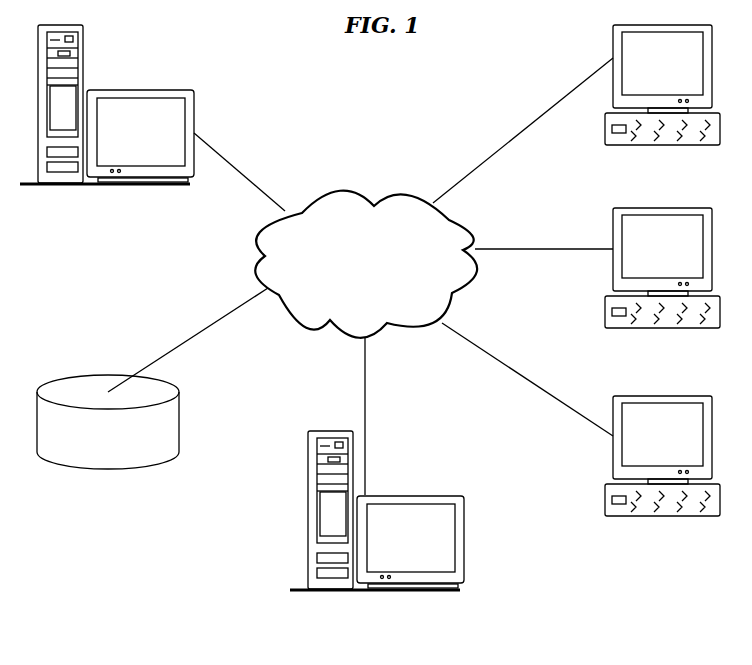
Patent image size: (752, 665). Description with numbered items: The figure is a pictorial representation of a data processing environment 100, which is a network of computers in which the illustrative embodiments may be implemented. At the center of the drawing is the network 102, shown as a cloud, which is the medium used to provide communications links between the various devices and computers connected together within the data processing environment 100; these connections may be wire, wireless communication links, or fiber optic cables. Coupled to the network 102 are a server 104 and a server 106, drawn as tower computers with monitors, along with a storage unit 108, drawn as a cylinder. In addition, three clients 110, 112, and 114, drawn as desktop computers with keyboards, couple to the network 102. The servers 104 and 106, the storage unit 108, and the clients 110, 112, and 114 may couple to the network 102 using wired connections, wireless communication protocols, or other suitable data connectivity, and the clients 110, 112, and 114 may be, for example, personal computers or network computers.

The data processing environment 100 is at (301, 61).
The network 102 is at (418, 271).
The server 104 is at (157, 212).
The server 106 is at (395, 642).
The storage unit 108 is at (159, 438).
The client 110 is at (701, 350).
The client 112 is at (701, 539).
The client 114 is at (701, 167).